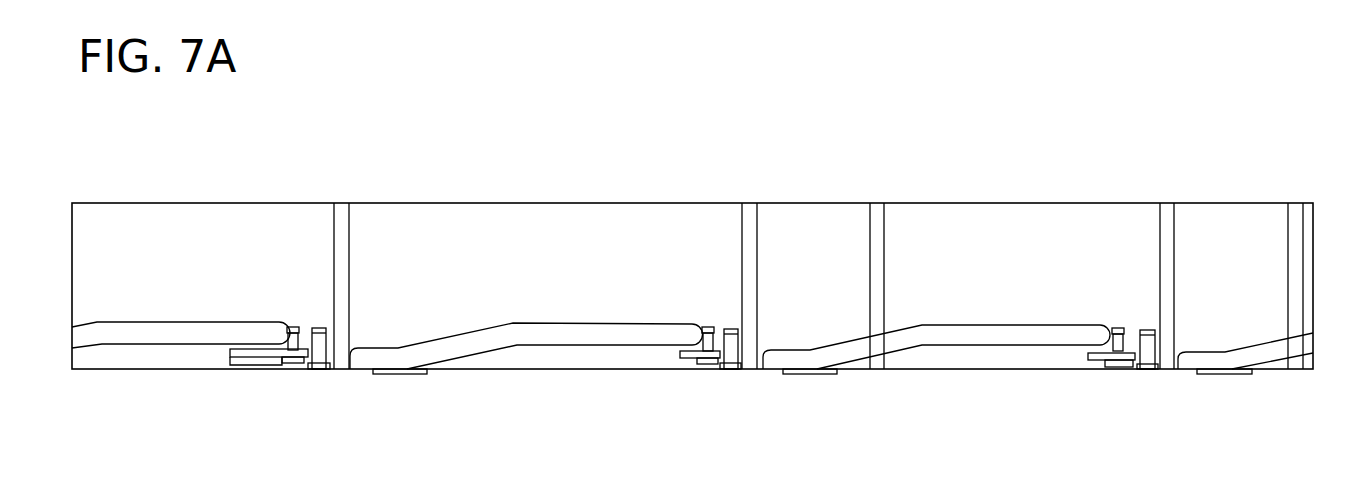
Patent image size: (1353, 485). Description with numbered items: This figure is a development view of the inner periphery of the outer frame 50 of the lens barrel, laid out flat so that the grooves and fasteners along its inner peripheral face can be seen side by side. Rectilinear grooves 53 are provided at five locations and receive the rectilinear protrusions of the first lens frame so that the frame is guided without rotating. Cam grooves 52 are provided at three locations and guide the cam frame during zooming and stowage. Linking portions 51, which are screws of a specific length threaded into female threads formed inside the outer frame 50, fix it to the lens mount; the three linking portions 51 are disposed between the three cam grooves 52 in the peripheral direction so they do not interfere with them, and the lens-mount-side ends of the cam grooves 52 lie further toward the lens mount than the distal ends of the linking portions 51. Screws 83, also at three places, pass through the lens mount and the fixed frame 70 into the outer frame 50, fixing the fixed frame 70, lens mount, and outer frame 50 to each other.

The outer frame 50 is at (250, 173).
The linking portions 51 is at (327, 355).
The cam grooves 52 is at (123, 330).
The rectilinear grooves 53 is at (340, 215).
The fixed frame 70 is at (268, 355).
The screws 83 is at (292, 333).